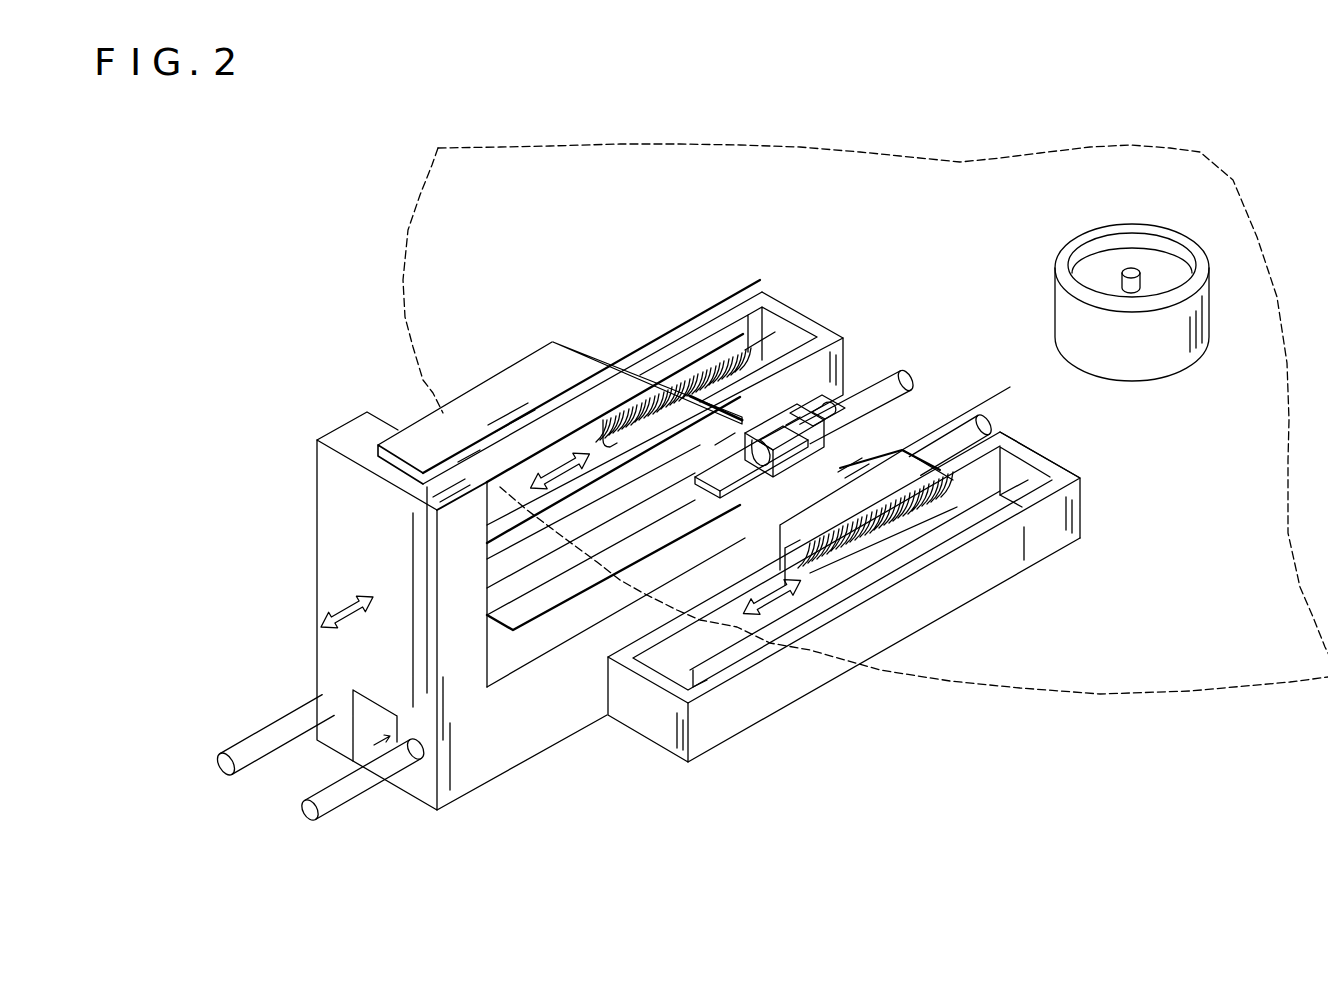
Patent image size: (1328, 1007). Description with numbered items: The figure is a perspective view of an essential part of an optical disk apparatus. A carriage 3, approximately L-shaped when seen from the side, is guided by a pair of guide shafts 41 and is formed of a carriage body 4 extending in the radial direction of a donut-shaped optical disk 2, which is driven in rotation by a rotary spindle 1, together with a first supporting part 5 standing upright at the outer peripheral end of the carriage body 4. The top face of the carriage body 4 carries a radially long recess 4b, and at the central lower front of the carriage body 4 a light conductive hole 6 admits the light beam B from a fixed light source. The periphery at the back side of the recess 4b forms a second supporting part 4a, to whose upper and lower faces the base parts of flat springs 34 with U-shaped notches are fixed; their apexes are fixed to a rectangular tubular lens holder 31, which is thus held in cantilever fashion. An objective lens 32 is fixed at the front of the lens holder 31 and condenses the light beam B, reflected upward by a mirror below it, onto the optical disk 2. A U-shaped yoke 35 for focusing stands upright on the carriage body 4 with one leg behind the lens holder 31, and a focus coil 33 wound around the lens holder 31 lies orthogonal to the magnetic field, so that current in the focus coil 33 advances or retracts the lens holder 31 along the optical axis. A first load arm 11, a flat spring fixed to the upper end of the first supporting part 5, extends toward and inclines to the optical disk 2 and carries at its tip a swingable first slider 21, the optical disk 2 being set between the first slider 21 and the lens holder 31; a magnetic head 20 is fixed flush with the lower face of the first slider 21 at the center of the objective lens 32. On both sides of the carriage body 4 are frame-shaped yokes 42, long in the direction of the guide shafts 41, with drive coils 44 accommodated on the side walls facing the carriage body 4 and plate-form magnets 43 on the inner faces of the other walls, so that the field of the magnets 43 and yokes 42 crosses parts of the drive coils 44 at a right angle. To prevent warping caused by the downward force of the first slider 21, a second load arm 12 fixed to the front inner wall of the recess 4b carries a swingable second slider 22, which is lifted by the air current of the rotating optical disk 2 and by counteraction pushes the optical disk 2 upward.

The rotary spindle 1 is at (1208, 288).
The optical disk 2 is at (1277, 683).
The carriage 3 is at (465, 872).
The carriage body 4 is at (727, 580).
The second supporting part 4a is at (870, 413).
The recess 4b is at (580, 497).
The first supporting part 5 is at (347, 654).
The light conductive hole 6 is at (360, 733).
The first load arm 11 is at (417, 423).
The second load arm 12 is at (573, 583).
The magnetic head 20 is at (813, 617).
The first slider 21 is at (758, 430).
The second slider 22 is at (690, 490).
The lens holder 31 is at (757, 470).
The objective lens 32 is at (772, 477).
The focus coil 33 is at (718, 440).
The flat springs 34 is at (790, 420).
The yoke for focusing 35 is at (863, 437).
The guide shafts 41 is at (270, 740).
The yokes 42 is at (843, 337).
The magnets 43 is at (685, 357).
The drive coils 44 is at (662, 345).
The light beam B is at (302, 790).